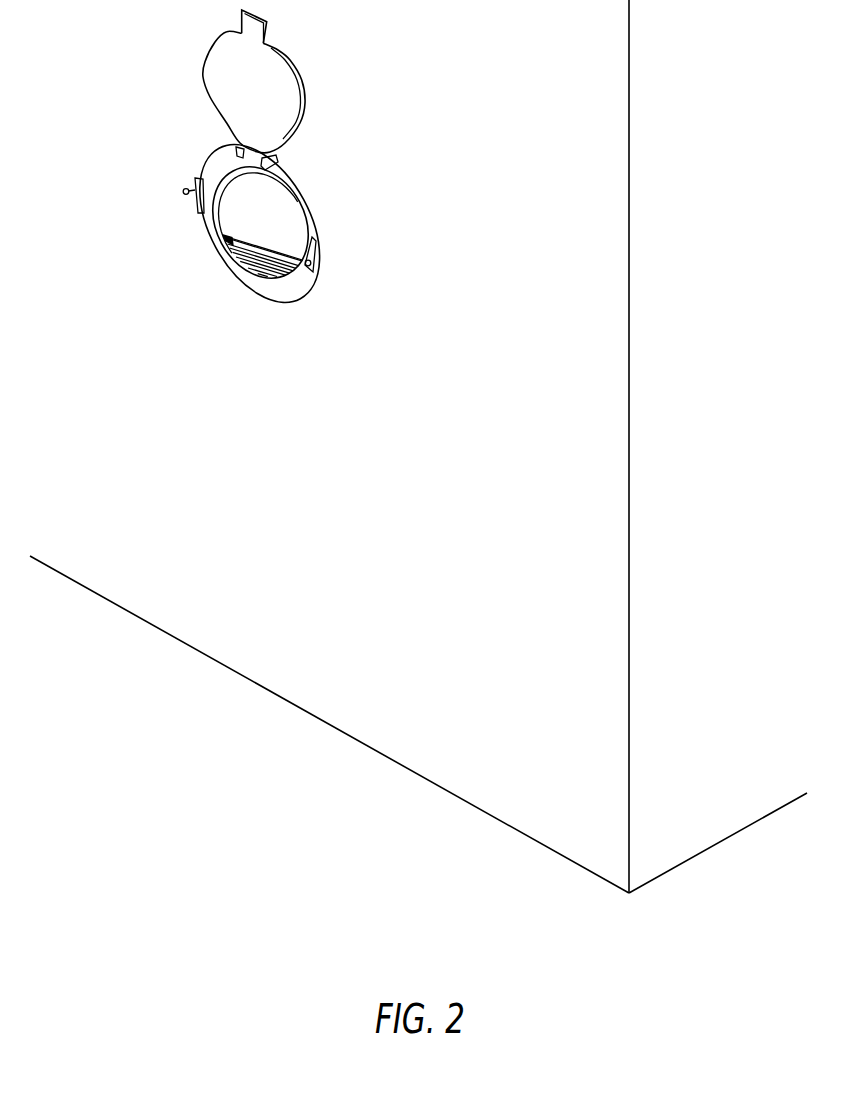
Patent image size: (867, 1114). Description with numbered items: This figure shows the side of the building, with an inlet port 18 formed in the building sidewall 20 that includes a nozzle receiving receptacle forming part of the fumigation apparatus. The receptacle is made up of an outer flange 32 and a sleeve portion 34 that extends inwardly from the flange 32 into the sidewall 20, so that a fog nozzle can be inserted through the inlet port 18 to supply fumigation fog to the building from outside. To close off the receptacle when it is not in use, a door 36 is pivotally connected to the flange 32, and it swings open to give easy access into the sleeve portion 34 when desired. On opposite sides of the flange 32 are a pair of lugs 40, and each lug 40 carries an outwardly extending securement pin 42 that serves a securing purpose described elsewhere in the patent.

The inlet port 18 is at (297, 193).
The sidewall 20 is at (467, 458).
The outer flange 32 is at (285, 292).
The sleeve portion 34 is at (247, 227).
The door 36 is at (273, 101).
The lugs 40 is at (193, 202).
The securement pin 42 is at (185, 192).